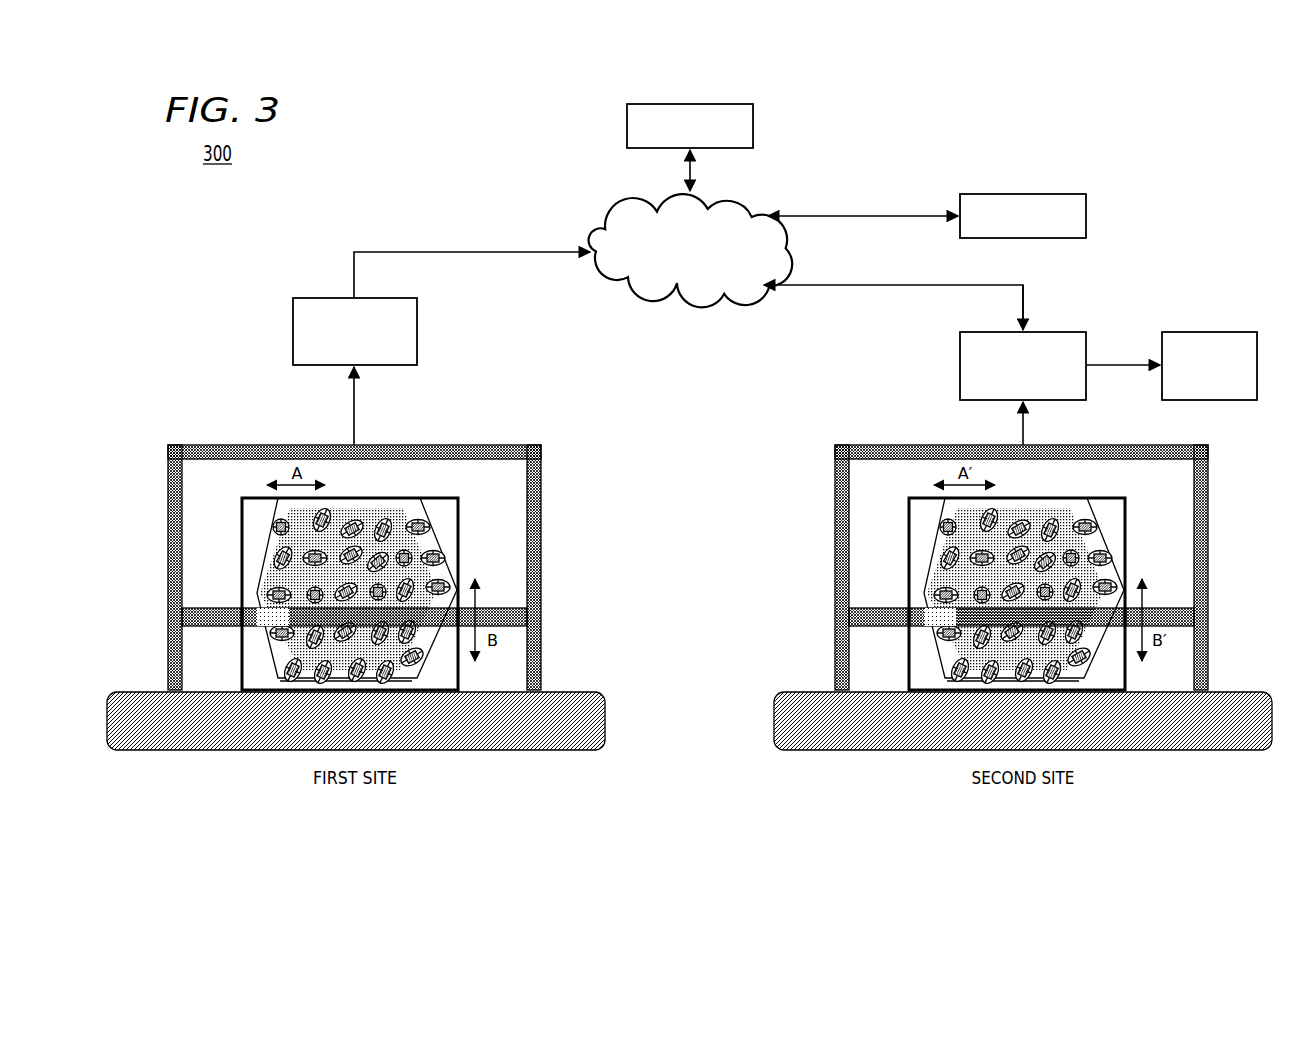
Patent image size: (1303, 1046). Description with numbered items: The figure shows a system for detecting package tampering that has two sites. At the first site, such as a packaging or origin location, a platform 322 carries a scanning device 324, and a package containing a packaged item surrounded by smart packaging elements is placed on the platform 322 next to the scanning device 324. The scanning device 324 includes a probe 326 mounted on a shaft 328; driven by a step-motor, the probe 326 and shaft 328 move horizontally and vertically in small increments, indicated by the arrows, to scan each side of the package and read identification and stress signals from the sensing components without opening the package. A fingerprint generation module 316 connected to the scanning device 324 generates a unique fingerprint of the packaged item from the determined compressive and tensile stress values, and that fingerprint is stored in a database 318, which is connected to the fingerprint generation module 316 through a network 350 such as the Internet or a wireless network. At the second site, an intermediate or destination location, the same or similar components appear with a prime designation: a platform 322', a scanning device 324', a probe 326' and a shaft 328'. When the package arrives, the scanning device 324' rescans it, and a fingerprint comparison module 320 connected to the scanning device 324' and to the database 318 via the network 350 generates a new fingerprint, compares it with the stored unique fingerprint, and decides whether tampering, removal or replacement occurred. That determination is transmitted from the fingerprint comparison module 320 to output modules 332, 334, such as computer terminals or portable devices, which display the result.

The fingerprint generation module 316 is at (333, 298).
The database 318 is at (700, 104).
The fingerprint comparison module 320 is at (1050, 332).
The platform 322 is at (364, 704).
The platform 322' is at (1033, 704).
The scanning device 324 is at (325, 567).
The scanning device 324' is at (992, 567).
The probe 326 is at (244, 601).
The probe 326' is at (909, 601).
The shaft 328 is at (390, 618).
The shaft 328' is at (1059, 618).
The output module 332 is at (1205, 332).
The output module 334 is at (1027, 194).
The network 350 is at (617, 214).